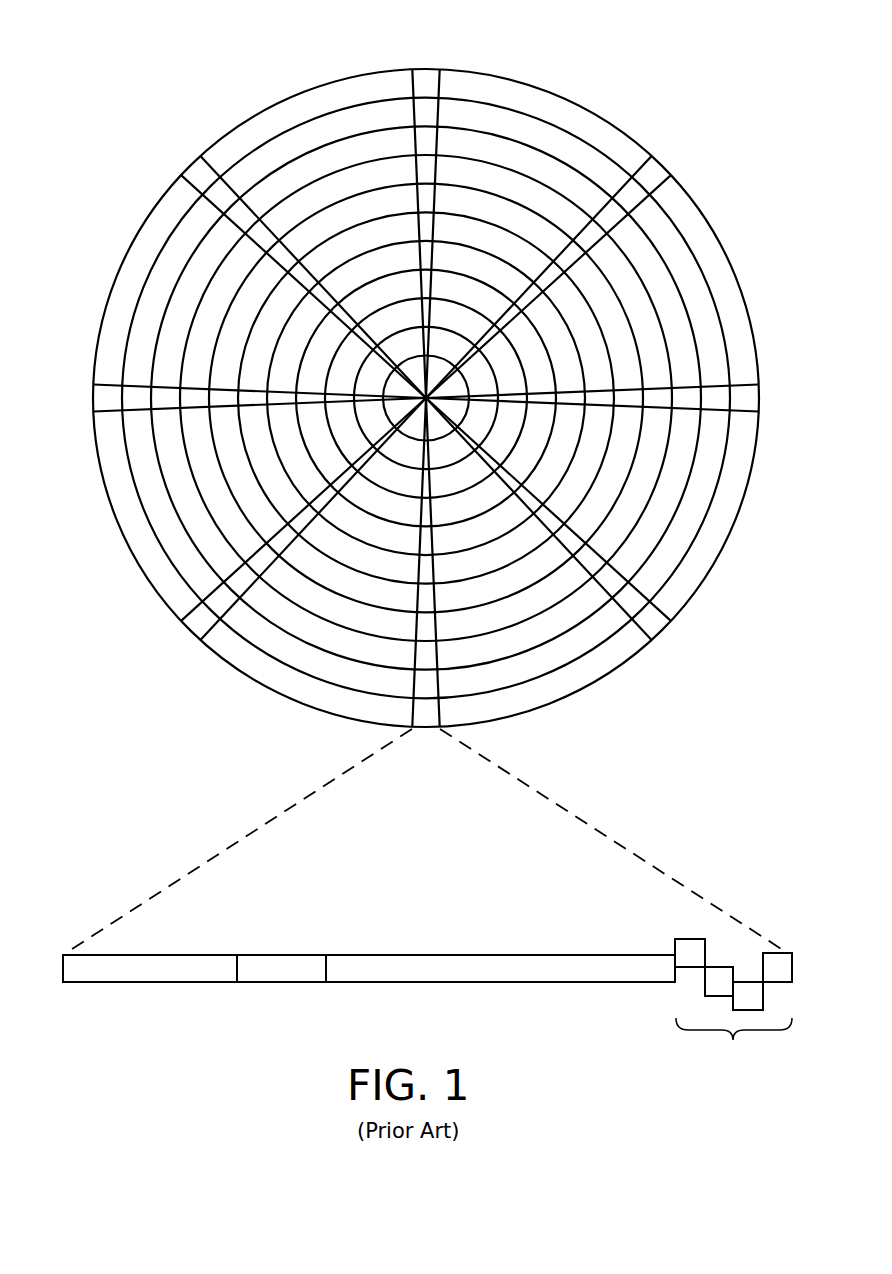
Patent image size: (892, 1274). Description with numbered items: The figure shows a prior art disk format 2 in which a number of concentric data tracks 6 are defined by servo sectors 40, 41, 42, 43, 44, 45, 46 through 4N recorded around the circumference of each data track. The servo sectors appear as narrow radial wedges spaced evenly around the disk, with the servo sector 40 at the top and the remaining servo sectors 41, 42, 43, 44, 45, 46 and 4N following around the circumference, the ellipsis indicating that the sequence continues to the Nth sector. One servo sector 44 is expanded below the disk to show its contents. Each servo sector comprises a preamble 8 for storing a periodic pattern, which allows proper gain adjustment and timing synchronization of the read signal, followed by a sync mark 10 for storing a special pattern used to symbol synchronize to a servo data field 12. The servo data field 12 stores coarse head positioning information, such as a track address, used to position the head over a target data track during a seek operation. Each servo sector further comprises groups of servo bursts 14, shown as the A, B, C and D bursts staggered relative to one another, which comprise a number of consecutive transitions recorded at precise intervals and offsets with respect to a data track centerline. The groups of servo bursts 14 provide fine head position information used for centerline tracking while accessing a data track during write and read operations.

The disk format 2 is at (426, 370).
The data tracks 6 is at (540, 133).
The servo sector 40 is at (426, 80).
The servo sector 41 is at (654, 173).
The servo sector 42 is at (752, 400).
The servo sector 43 is at (654, 624).
The servo sector 44 is at (278, 802).
The servo sector 45 is at (195, 626).
The servo sector 46 is at (92, 402).
The servo sector 4N is at (196, 174).
The preamble 8 is at (128, 984).
The sync mark 10 is at (278, 984).
The servo data field 12 is at (487, 984).
The servo bursts 14 is at (653, 916).